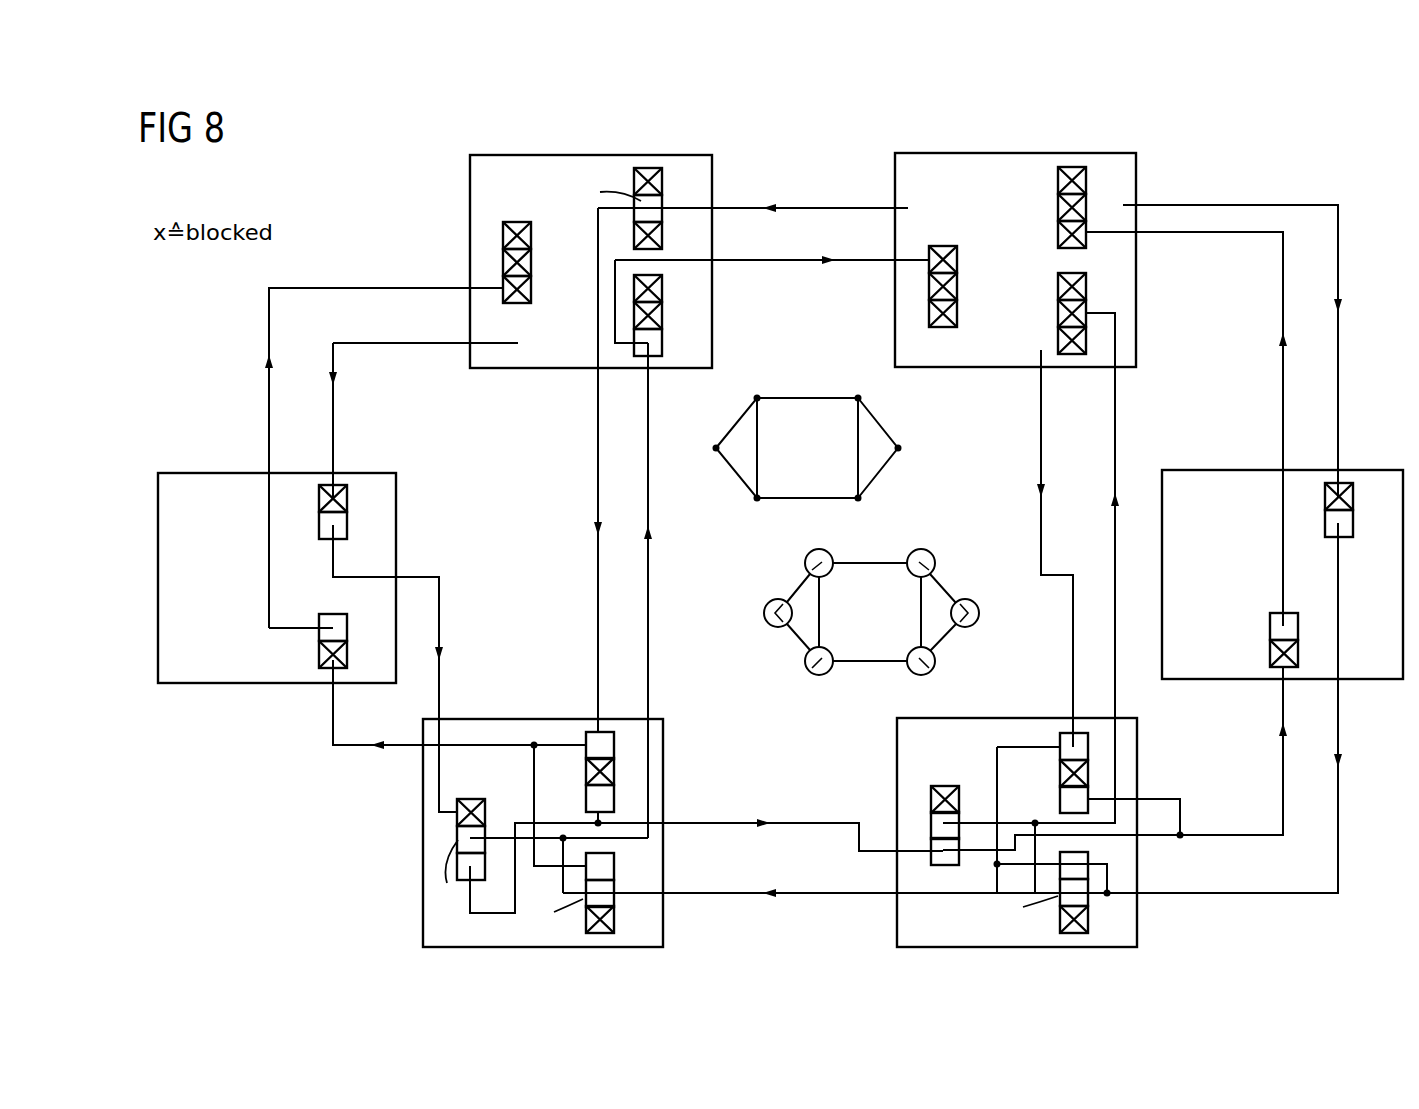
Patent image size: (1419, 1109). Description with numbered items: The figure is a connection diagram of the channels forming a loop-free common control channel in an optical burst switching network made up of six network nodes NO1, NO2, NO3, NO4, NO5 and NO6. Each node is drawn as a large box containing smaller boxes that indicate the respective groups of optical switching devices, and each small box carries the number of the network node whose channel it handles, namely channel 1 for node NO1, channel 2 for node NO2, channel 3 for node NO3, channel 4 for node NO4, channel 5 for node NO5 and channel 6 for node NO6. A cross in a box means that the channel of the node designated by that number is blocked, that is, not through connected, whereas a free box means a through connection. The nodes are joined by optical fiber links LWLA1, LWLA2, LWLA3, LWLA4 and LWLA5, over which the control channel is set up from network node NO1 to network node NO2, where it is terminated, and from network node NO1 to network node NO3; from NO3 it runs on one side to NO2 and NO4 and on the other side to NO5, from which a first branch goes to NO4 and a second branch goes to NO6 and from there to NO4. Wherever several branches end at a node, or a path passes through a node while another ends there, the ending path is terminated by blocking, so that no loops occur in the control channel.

The network node NO1 is at (277, 561).
The network node NO2 is at (591, 247).
The network node NO3 is at (516, 833).
The network node NO4 is at (1015, 246).
The network node NO5 is at (987, 832).
The network node NO6 is at (1282, 559).
The optical fiber link LWLA1 is at (333, 730).
The optical fiber link LWLA2 is at (269, 316).
The optical fiber link LWLA3 is at (598, 480).
The optical fiber link LWLA4 is at (760, 262).
The optical fiber link LWLA5 is at (697, 822).
The channel of network node 1 is at (744, 532).
The channel of network node 2 is at (791, 471).
The channel of network node 3 is at (791, 599).
The channel of network node 4 is at (893, 471).
The channel of network node 5 is at (893, 599).
The channel of network node 6 is at (946, 532).